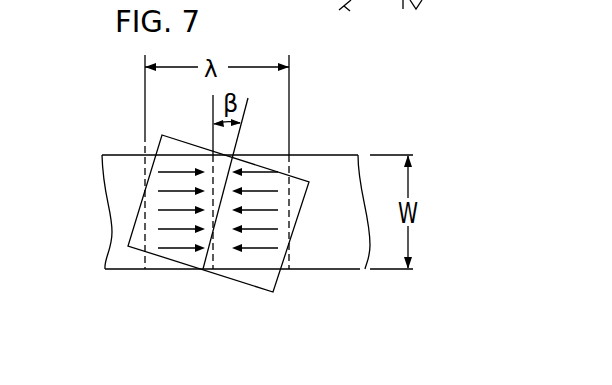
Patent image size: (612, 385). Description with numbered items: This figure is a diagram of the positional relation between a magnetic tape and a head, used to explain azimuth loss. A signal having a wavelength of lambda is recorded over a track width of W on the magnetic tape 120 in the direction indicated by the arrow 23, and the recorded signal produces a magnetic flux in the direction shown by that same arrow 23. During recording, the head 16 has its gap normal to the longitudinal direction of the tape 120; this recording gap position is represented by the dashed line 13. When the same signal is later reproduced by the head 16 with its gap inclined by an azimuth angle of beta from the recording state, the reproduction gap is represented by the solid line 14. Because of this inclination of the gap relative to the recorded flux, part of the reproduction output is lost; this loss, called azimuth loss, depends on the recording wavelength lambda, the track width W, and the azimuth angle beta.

The magnetic tape 120 is at (318, 154).
The magnetic head 16 is at (278, 278).
The solid line 14 is at (202, 262).
The arrow 23 is at (181, 252).
The dashed line 13 is at (214, 257).